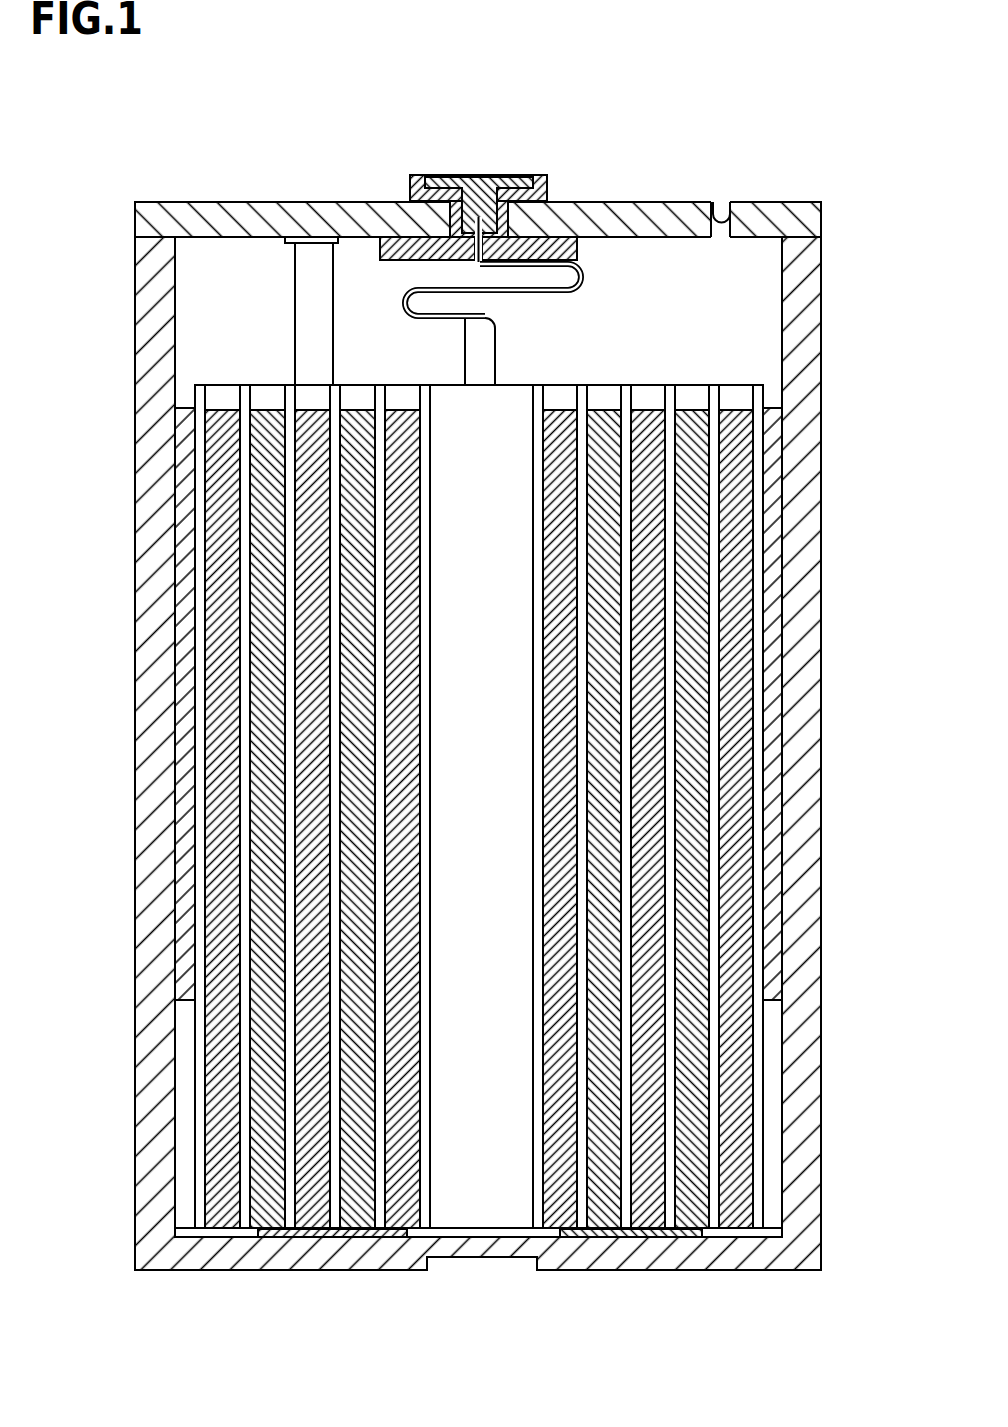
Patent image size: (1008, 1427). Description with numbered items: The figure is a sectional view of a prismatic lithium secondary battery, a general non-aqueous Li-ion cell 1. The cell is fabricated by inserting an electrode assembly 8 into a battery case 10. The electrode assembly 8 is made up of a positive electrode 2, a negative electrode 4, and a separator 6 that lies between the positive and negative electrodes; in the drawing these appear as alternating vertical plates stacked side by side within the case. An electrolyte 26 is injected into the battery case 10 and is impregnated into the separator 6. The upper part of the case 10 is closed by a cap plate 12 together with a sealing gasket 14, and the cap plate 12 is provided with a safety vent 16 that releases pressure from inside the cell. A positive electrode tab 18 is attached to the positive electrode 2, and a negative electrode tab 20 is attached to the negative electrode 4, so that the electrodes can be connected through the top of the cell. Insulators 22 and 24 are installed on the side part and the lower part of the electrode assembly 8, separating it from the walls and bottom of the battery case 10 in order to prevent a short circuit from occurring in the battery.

The Li-ion cell 1 is at (858, 392).
The positive electrode 2 is at (733, 1070).
The negative electrode 4 is at (265, 1030).
The separator 6 is at (243, 1155).
The electrode assembly 8 is at (672, 345).
The battery case 10 is at (155, 343).
The cap plate 12 is at (611, 216).
The sealing gasket 14 is at (417, 175).
The safety vent 16 is at (722, 206).
The positive electrode tab 18 is at (315, 262).
The negative electrode tab 20 is at (478, 214).
The insulator 22 is at (187, 691).
The insulator 24 is at (320, 1237).
The electrolyte 26 is at (713, 1127).